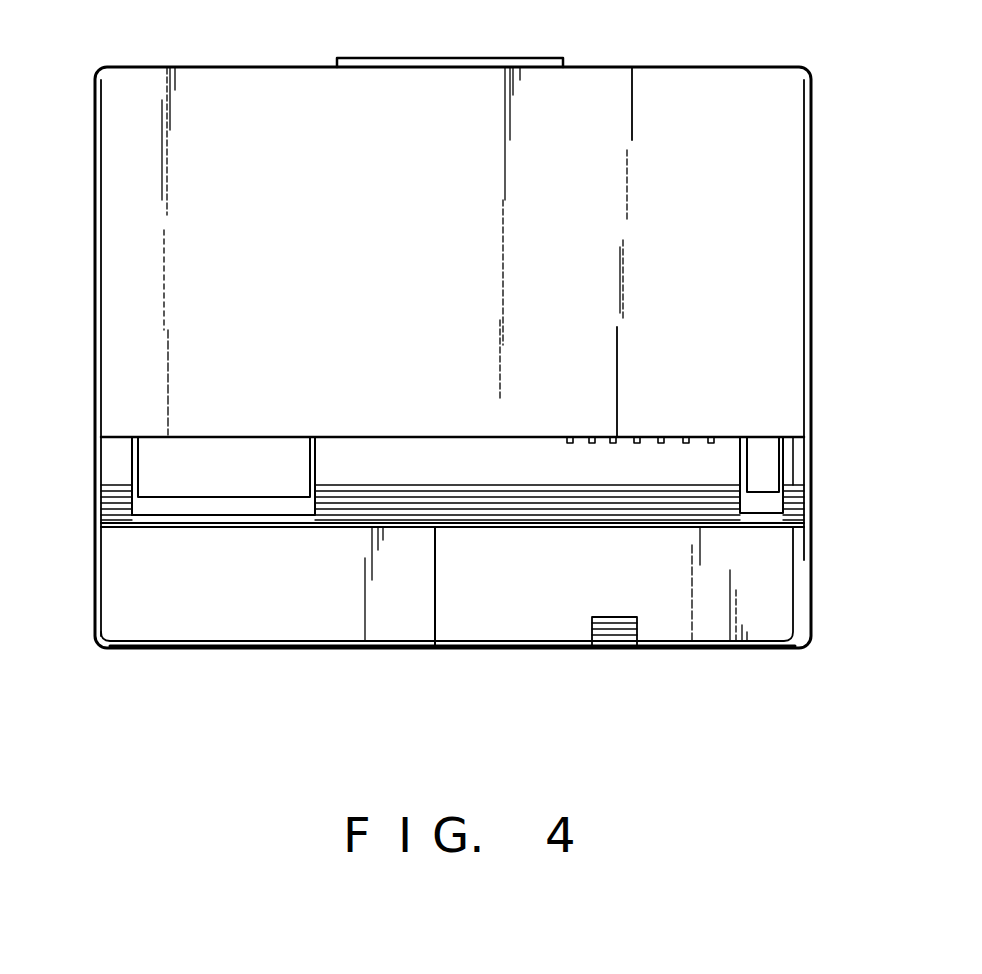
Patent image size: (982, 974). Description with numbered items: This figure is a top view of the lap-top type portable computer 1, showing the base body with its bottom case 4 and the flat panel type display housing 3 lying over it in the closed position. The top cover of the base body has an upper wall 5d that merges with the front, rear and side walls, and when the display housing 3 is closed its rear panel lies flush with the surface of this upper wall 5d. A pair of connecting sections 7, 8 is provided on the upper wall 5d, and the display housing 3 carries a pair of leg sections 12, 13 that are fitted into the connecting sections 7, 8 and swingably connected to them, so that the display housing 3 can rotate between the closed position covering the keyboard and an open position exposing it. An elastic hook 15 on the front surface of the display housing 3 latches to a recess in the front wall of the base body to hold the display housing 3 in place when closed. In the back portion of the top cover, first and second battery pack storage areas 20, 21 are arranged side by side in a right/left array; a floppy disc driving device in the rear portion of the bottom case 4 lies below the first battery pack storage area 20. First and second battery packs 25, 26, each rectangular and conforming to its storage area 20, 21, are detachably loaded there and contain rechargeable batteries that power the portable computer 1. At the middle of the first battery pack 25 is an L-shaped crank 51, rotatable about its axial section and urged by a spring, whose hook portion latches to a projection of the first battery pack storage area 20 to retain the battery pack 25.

The portable computer 1 is at (70, 331).
The display housing 3 is at (785, 325).
The bottom case 4 is at (812, 618).
The upper wall 5d is at (438, 447).
The connecting section 7 is at (128, 465).
The connecting section 8 is at (786, 470).
The leg section 12 is at (243, 458).
The leg section 13 is at (757, 445).
The hook 15 is at (455, 65).
The first battery pack storage area 20 is at (725, 525).
The second battery pack storage area 21 is at (175, 528).
The first battery pack 25 is at (713, 647).
The second battery pack 26 is at (313, 633).
The crank 51 is at (613, 647).